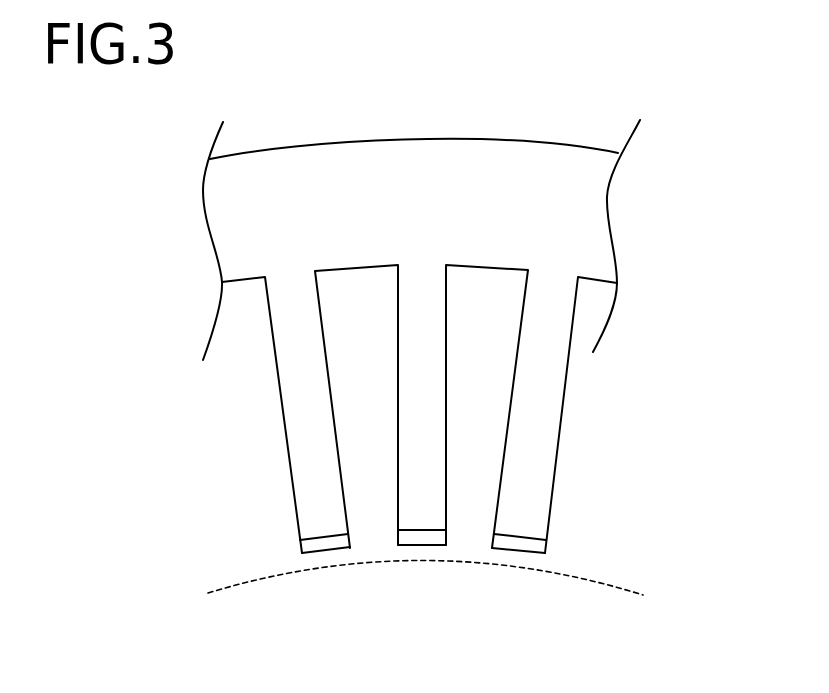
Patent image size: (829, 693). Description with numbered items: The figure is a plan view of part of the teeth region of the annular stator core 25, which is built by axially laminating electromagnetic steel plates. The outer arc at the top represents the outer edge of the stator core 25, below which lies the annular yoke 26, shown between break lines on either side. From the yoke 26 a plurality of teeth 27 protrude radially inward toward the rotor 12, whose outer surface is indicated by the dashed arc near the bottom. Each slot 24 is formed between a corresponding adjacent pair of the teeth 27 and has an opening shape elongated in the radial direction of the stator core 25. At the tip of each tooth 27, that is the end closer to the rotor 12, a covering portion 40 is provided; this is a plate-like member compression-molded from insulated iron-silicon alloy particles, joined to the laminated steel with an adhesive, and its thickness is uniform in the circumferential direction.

The rotor 12 is at (578, 577).
The slot 24 is at (483, 282).
The stator core 25 is at (518, 142).
The yoke 26 is at (585, 225).
The teeth 27 is at (447, 433).
The covering portion 40 is at (412, 547).